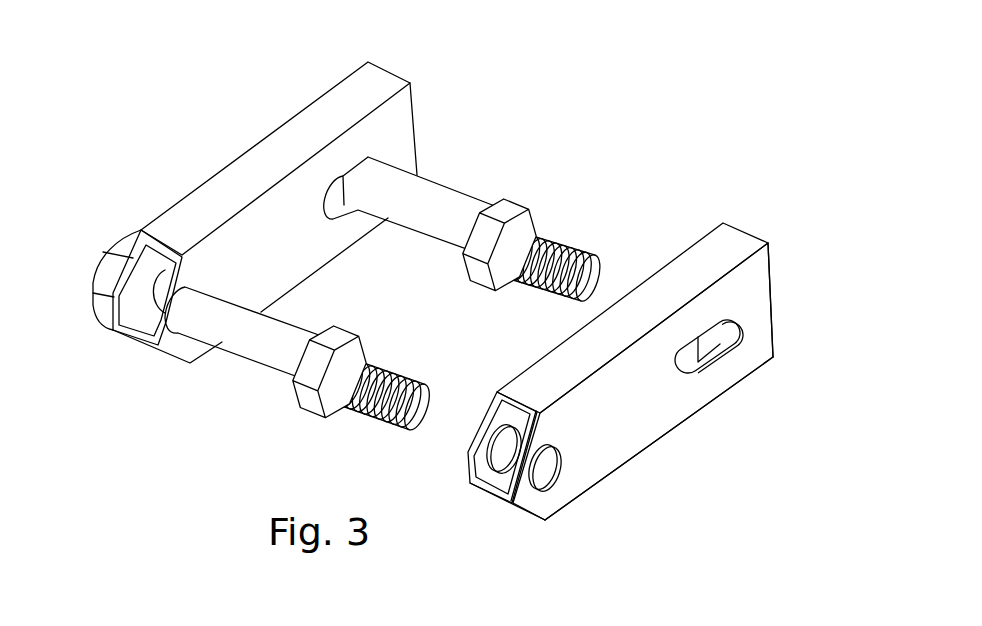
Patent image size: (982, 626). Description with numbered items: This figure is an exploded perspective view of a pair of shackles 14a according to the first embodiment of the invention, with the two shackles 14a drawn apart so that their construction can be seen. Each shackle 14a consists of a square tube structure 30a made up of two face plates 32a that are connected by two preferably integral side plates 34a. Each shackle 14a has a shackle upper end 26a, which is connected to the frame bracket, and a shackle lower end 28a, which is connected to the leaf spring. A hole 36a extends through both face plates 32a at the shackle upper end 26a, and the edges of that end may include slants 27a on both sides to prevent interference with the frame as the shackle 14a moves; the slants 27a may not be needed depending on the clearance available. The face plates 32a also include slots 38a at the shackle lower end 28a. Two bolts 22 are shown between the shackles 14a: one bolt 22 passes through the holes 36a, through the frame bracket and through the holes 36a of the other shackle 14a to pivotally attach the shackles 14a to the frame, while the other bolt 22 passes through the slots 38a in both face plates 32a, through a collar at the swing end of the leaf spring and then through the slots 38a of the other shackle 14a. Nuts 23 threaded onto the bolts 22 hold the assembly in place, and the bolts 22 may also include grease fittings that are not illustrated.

The shackle 14a is at (472, 291).
The bolt 22 is at (440, 198).
The nut 23 is at (508, 213).
The square tube structure 30a is at (639, 368).
The shackle lower end 28a is at (681, 381).
The face plate 32a is at (547, 350).
The side plate 34a is at (653, 300).
The hole 36a is at (547, 468).
The slot 38a is at (713, 337).
The shackle upper end 26a is at (545, 469).
The slant 27a is at (483, 415).